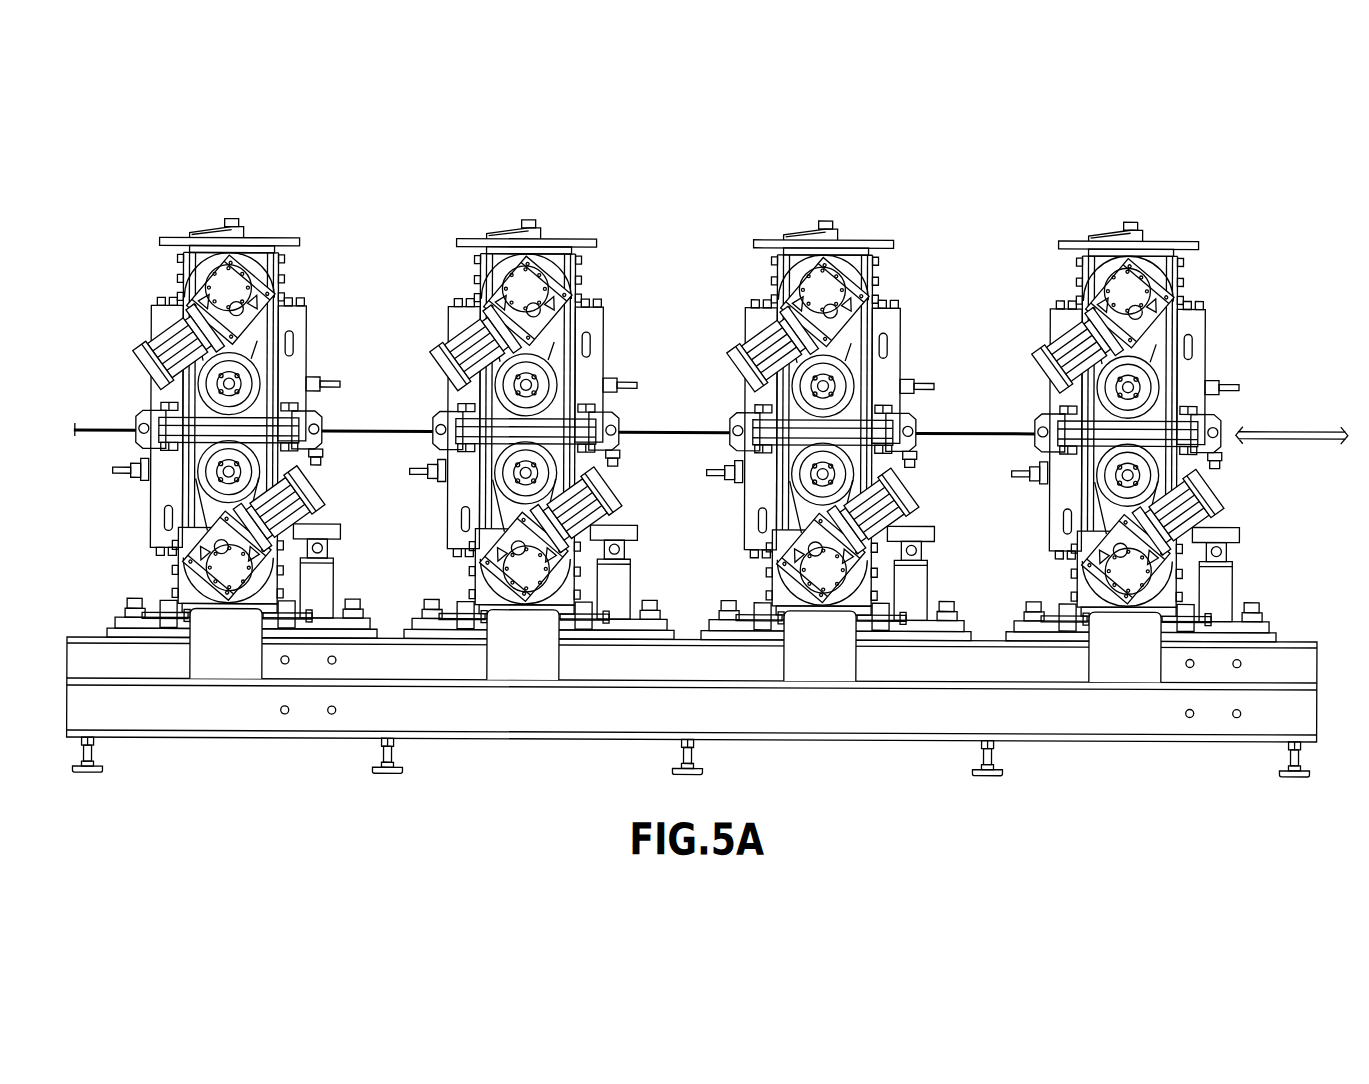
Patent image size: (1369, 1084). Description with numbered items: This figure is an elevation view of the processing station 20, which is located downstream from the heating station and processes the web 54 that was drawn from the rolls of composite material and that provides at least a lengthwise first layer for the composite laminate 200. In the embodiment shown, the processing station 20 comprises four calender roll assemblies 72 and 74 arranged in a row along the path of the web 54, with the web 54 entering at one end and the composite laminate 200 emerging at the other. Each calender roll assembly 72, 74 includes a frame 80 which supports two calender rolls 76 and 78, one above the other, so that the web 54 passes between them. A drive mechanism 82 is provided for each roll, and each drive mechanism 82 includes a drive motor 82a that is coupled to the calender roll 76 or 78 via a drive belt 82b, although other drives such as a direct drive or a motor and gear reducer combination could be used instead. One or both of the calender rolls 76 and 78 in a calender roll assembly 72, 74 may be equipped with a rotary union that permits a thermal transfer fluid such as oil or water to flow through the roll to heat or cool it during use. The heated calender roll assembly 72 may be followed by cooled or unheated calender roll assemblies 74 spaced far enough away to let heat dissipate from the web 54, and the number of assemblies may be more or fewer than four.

The processing station 20 is at (136, 163).
The web 54 is at (98, 427).
The calender roll assembly 72 is at (216, 200).
The calender roll assembly 74 is at (802, 200).
The calender roll 76 is at (288, 379).
The calender roll 78 is at (158, 389).
The frame 80 is at (310, 732).
The drive mechanism 82 is at (225, 427).
The drive motor 82a is at (143, 337).
The drive belt 82b is at (282, 300).
The composite laminate 200 is at (1293, 427).